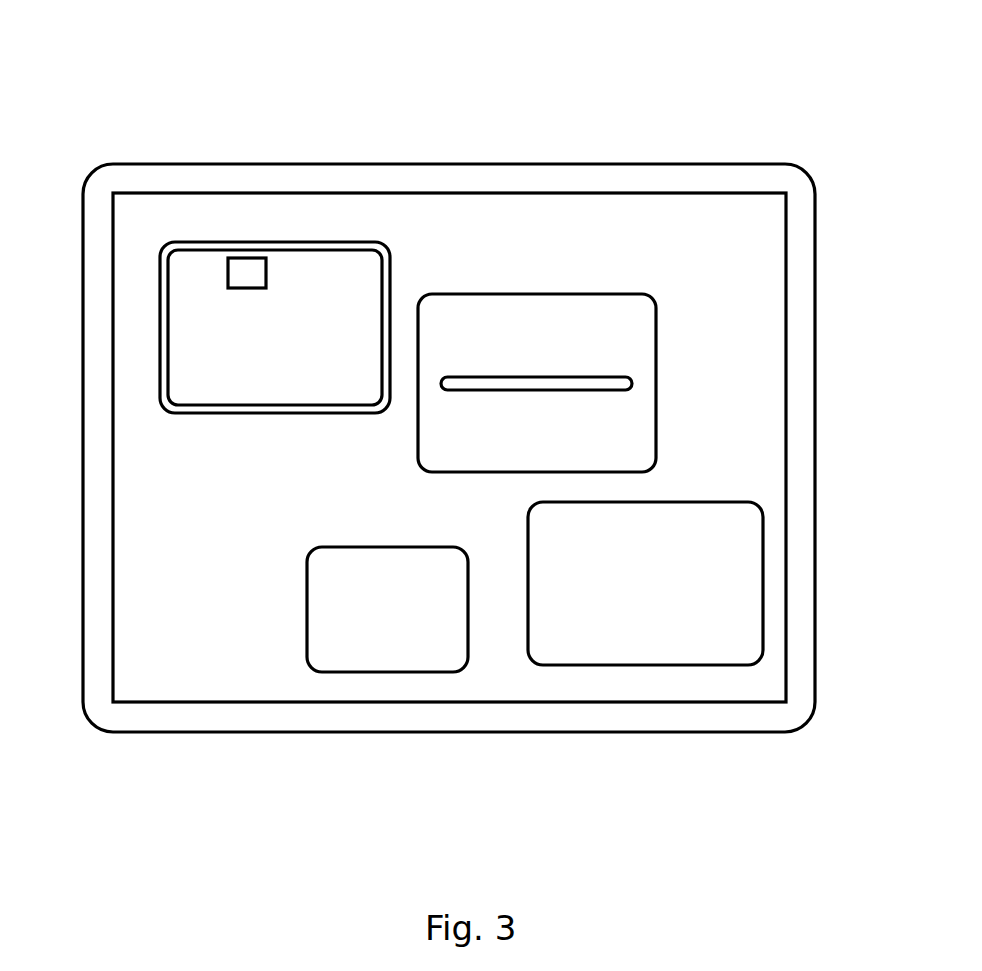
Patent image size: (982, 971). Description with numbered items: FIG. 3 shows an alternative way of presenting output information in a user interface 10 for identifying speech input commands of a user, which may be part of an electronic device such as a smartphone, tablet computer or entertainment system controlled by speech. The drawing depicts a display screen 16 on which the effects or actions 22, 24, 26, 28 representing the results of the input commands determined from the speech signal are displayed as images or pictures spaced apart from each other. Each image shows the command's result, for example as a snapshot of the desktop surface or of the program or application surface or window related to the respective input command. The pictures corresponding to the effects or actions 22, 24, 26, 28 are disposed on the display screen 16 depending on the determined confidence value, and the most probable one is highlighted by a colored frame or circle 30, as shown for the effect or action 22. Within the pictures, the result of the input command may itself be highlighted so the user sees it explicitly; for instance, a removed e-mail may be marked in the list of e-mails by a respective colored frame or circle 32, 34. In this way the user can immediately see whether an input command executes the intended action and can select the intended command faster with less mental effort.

The user interface 10 is at (736, 121).
The display screen 16 is at (588, 217).
The effect or action 22 is at (181, 327).
The effect or action 24 is at (640, 341).
The effect or action 26 is at (745, 560).
The effect or action 28 is at (322, 612).
The colored frame or circle 30 is at (164, 274).
The colored frame or circle 32 is at (246, 288).
The colored frame or circle 34 is at (532, 377).